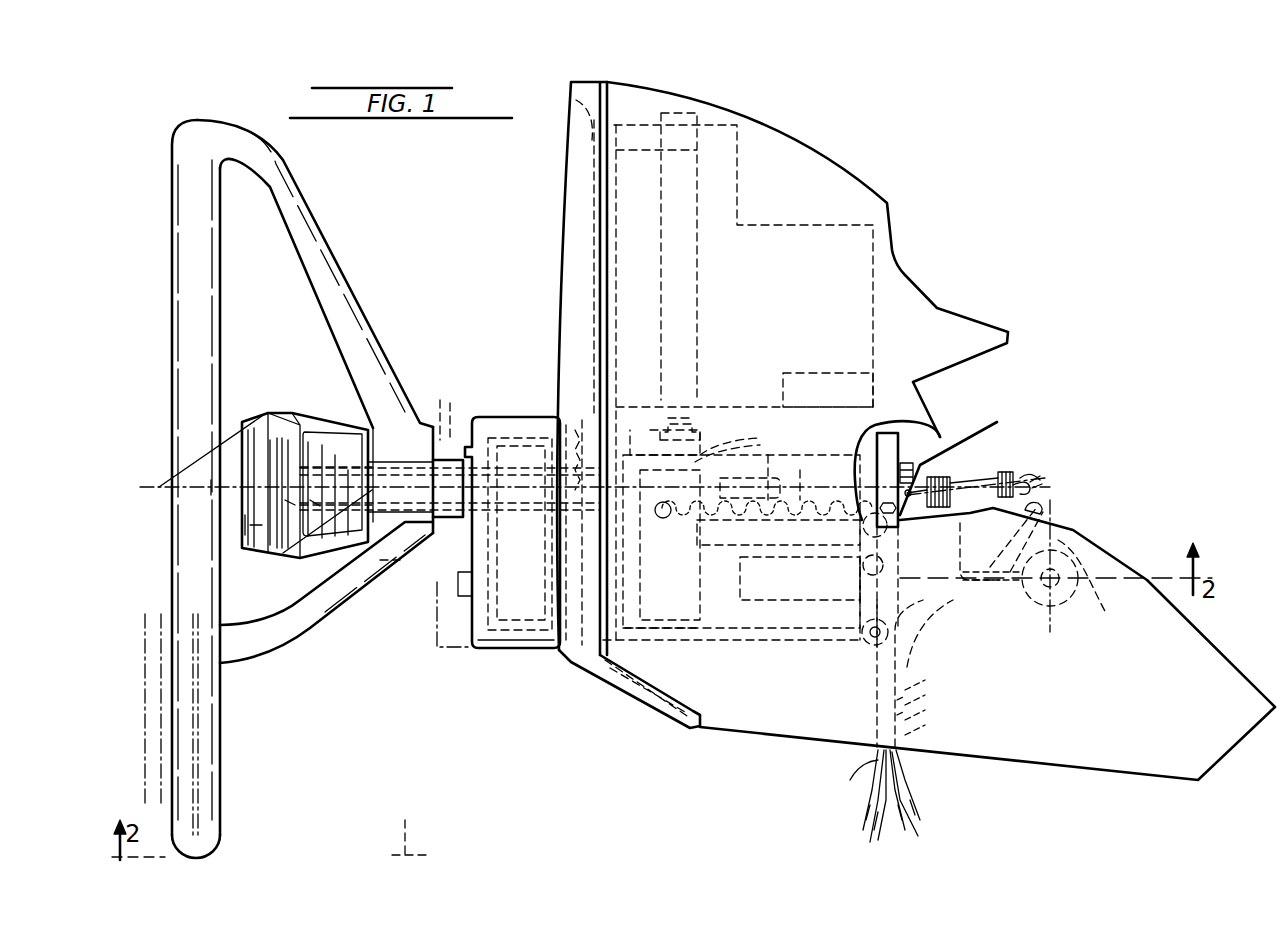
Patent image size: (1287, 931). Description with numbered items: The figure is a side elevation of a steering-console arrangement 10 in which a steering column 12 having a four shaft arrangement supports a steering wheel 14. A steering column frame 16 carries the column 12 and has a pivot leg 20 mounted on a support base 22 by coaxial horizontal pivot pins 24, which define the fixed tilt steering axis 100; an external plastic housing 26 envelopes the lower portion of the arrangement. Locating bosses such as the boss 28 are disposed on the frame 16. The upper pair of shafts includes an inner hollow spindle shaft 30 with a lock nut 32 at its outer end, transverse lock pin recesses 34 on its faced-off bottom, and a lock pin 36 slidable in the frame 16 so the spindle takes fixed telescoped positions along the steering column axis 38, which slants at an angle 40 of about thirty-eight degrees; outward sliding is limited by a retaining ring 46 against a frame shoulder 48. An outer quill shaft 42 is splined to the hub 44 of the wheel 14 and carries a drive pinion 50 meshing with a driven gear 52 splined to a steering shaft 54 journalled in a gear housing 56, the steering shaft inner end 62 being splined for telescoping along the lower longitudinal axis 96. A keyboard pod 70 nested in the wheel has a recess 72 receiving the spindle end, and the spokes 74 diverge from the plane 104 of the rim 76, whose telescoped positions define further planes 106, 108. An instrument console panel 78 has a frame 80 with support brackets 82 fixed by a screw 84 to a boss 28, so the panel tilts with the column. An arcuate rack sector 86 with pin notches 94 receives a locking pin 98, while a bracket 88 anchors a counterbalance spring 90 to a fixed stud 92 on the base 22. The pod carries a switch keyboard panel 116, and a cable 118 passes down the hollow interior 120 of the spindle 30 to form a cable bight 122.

The steering-console arrangement 10 is at (1100, 476).
The steering column 12 is at (447, 520).
The steering wheel 14 is at (353, 604).
The steering column frame 16 is at (756, 636).
The pivot leg 20 is at (995, 630).
The support base 22 is at (855, 648).
The pivot pins 24 is at (1093, 553).
The external plastic housing 26 is at (965, 314).
The locating boss 28 is at (660, 448).
The spindle shaft 30 is at (866, 456).
The lock nut 32 is at (378, 437).
The lock pin recesses 34 is at (790, 512).
The lock pin 36 is at (667, 520).
The steering column axis 38 is at (150, 480).
The angle 40 is at (211, 480).
The quill shaft 42 is at (440, 407).
The hub 44 is at (412, 580).
The retaining ring 46 is at (959, 457).
The frame shoulder 48 is at (712, 458).
The drive pinion 50 is at (506, 432).
The driven gear 52 is at (538, 648).
The steering shaft 54 is at (676, 634).
The gear housing 56 is at (480, 655).
The steering shaft inner end 62 is at (973, 633).
The keyboard pod 70 is at (343, 424).
The recess 72 is at (288, 552).
The spokes 74 is at (331, 240).
The steering wheel rim 76 is at (214, 692).
The instrument console panel 78 is at (587, 140).
The frame 80 is at (742, 148).
The support brackets 82 is at (708, 408).
The screw 84 is at (668, 386).
The arcuate rack sector 86 is at (858, 622).
The bracket 88 is at (905, 437).
The counterbalance spring 90 is at (987, 478).
The fixed stud 92 is at (1030, 482).
The pin notches 94 is at (858, 570).
The longitudinal axis 96 is at (430, 605).
The locking pin 98 is at (860, 590).
The tilt steering axis 100 is at (1056, 572).
The plane 104 is at (200, 822).
The telescoped plane 106 is at (178, 608).
The telescoped plane 108 is at (145, 640).
The switch keyboard panel 116 is at (248, 524).
The cable 118 is at (768, 455).
The hollow interior 120 is at (800, 470).
The cable bight 122 is at (988, 597).